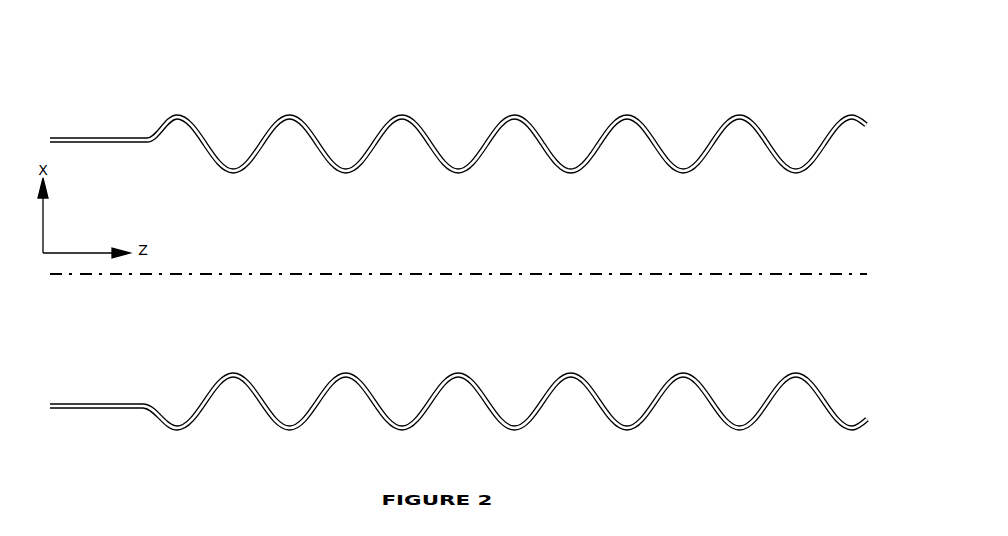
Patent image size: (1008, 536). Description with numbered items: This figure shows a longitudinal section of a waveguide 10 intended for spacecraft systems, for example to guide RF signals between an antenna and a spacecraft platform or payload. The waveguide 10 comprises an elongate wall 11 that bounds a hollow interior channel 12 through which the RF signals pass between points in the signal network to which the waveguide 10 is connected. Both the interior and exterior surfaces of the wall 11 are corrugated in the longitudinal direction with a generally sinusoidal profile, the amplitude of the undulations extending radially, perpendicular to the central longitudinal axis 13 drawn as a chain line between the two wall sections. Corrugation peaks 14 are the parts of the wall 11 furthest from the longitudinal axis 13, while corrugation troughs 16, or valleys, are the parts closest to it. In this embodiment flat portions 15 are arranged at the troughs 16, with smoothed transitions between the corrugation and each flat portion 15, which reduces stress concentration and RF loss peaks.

The waveguide 10 is at (95, 93).
The elongate wall 11 is at (258, 153).
The hollow interior channel 12 is at (848, 194).
The longitudinal axis 13 is at (837, 276).
The corrugation peaks 14 is at (513, 112).
The flat portions 15 is at (575, 165).
The corrugation troughs 16 is at (563, 175).